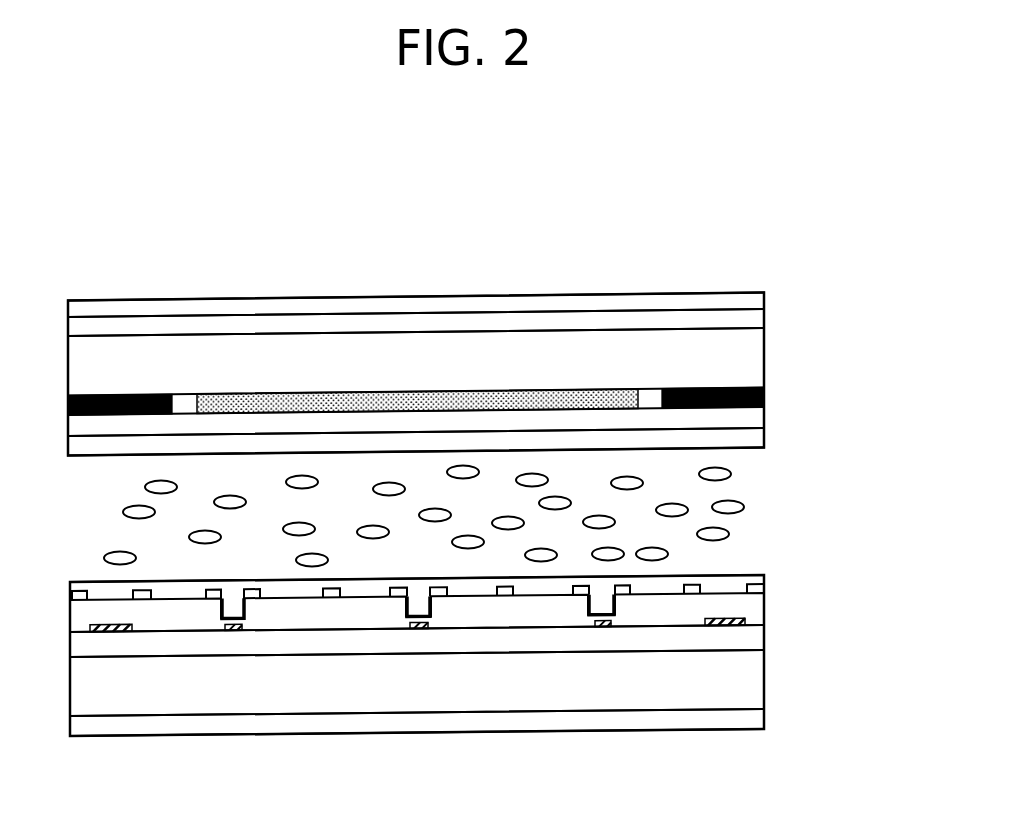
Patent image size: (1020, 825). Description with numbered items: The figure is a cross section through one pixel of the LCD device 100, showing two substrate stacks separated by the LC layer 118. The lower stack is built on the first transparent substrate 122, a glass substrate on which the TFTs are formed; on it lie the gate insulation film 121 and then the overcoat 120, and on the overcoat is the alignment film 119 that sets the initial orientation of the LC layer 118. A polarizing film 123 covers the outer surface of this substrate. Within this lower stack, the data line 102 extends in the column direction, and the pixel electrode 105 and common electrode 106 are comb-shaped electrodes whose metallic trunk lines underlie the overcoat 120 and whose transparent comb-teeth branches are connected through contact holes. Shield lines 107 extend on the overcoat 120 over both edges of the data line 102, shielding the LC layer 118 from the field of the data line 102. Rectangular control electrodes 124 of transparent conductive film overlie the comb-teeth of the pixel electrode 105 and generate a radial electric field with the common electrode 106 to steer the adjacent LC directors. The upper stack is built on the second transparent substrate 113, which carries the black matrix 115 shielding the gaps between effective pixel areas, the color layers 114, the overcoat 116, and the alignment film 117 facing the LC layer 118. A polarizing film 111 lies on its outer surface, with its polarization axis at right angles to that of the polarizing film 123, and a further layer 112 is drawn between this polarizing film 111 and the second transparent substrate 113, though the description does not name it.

The LCD device 100 is at (748, 236).
The data line 102 is at (113, 632).
The pixel electrode 105 is at (604, 626).
The common electrode 106 is at (332, 597).
The shield line 107 is at (145, 600).
The polarizing film 111 is at (764, 302).
The adhesive layer 112 is at (764, 320).
The second transparent substrate 113 is at (764, 348).
The color layers 114 is at (638, 389).
The black matrix 115 is at (764, 398).
The overcoat 116 is at (764, 421).
The alignment film 117 is at (764, 436).
The LC layer 118 is at (731, 474).
The alignment film 119 is at (764, 580).
The overcoat 120 is at (764, 609).
The gate insulation film 121 is at (764, 639).
The first transparent substrate 122 is at (764, 678).
The polarizing film 123 is at (764, 715).
The control electrode 124 is at (440, 596).